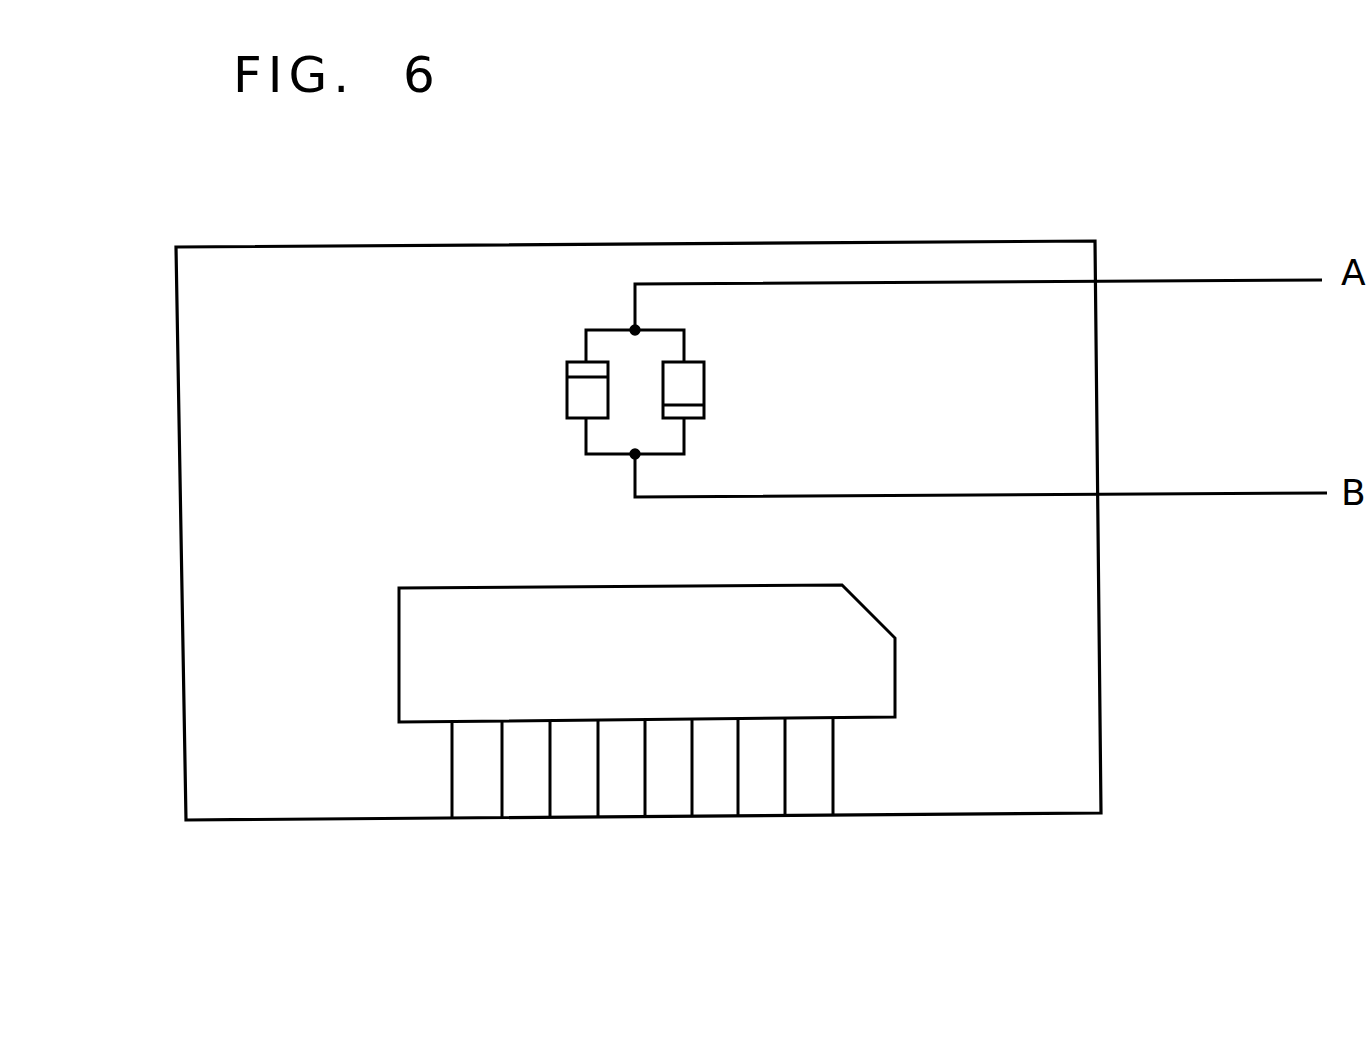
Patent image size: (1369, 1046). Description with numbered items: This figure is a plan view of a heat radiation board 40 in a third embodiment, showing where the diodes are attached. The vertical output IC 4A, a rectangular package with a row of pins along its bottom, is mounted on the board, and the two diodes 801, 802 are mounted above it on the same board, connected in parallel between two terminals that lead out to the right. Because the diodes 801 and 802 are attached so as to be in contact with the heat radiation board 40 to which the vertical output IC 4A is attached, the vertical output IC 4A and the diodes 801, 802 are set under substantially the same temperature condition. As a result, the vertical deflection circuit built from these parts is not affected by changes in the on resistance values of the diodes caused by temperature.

The heat radiation board 40 is at (248, 247).
The diode 801 is at (567, 392).
The diode 802 is at (704, 373).
The vertical output IC 4A is at (399, 632).